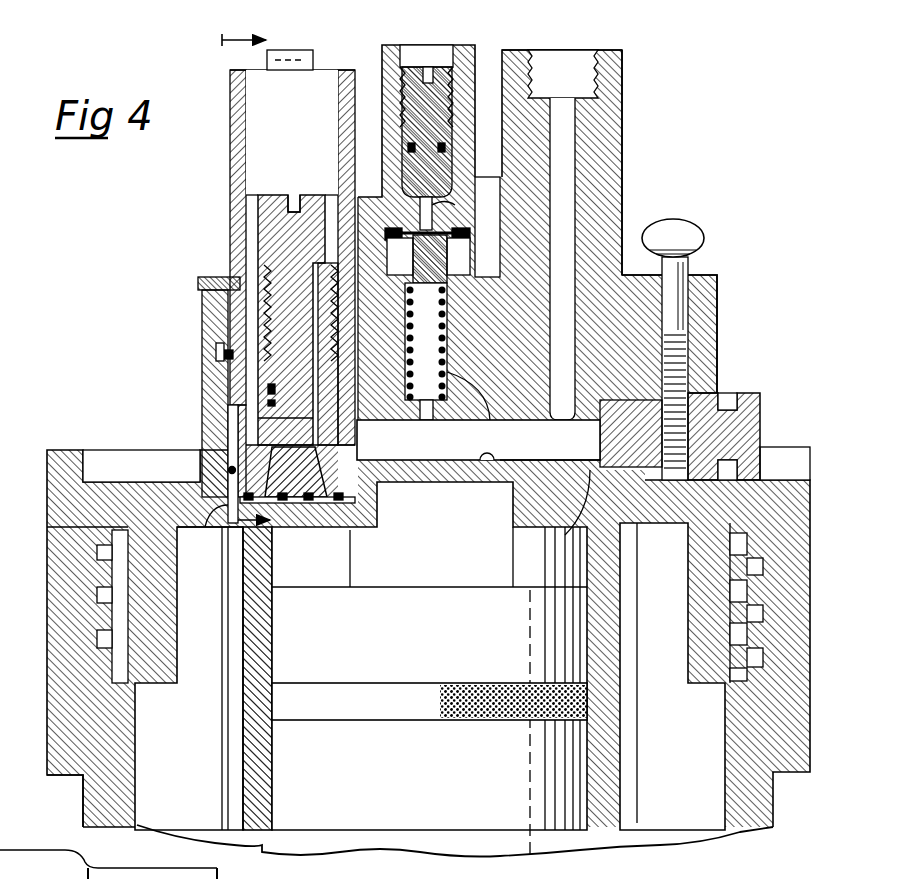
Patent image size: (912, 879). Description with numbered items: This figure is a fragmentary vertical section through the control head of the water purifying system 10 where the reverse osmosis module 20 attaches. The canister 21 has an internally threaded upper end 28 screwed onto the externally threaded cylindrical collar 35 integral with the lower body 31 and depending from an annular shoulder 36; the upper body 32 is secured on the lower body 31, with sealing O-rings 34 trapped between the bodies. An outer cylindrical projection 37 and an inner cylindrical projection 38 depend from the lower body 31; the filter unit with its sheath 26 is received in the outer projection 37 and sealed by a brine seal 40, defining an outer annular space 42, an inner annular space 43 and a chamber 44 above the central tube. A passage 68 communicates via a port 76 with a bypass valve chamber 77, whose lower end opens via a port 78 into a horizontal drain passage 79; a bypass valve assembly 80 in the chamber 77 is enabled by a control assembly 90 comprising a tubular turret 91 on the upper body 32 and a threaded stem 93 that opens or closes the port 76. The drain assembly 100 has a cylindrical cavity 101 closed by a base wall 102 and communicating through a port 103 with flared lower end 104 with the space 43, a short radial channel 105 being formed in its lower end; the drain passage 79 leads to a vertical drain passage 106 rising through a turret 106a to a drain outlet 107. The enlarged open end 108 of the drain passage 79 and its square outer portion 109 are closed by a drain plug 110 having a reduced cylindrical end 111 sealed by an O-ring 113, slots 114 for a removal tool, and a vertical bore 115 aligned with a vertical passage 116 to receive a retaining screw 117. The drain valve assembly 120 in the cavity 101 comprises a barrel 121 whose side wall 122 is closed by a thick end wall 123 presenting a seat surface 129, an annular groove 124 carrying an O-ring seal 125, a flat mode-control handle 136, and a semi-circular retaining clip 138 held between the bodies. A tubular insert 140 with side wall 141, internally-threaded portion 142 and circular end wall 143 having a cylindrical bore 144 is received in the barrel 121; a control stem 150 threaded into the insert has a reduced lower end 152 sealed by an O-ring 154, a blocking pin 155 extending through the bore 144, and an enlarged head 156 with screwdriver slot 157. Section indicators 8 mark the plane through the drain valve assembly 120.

The section line 8- 8 is at (237, 280).
The water purifying system 10 is at (680, 78).
The reverse osmosis module 20 is at (100, 274).
The canister 21 is at (83, 800).
The cylindrical coating or sheath 26 is at (530, 855).
The internally threaded upper end 28 is at (47, 688).
The lower body 31 is at (720, 322).
The upper body 32 is at (352, 166).
The sealing O-rings 34 is at (472, 233).
The externally threaded cylindrical collar 35 is at (125, 612).
The annular shoulder 36 is at (60, 535).
The outer cylindrical projection 37 is at (272, 790).
The inner cylindrical projection 38 is at (513, 572).
The brine seal 40 is at (502, 720).
The outer annular space 42 is at (182, 818).
The inner annular space 43 is at (292, 578).
The chamber 44 is at (212, 658).
The passage 68 is at (398, 186).
The port 76 is at (487, 182).
The bypass valve chamber 77 is at (488, 422).
The port 78 is at (433, 424).
The horizontal drain passage 79 is at (486, 464).
The bypass valve assembly 80 is at (449, 293).
The control assembly 90 is at (420, 45).
The tubular turret 91 is at (475, 62).
The stem 93 is at (437, 62).
The drain assembly 100 is at (137, 396).
The cylindrical cavity 101 is at (342, 192).
The base wall 102 is at (360, 535).
The port 103 is at (300, 505).
The outwardly-flared lower end 104 is at (318, 505).
The short radial channel 105 is at (218, 527).
The vertical drain passage 106 is at (614, 165).
The turret 106a is at (622, 136).
The drain outlet 107 is at (575, 62).
The enlarged open end 108 is at (563, 510).
The enlarged outer portion 109 is at (724, 395).
The drain plug 110 is at (760, 412).
The reduced cylindrical end 111 is at (590, 450).
The O-ring 113 is at (600, 430).
The slots 114 is at (738, 395).
The vertical bore 115 is at (675, 480).
The vertical passage 116 is at (706, 282).
The screw 117 is at (688, 258).
The drain valve assembly 120 is at (192, 185).
The barrel 121 is at (228, 148).
The side wall 122 is at (230, 103).
The end wall 123 is at (378, 498).
The annular groove 124 is at (224, 353).
The O-ring seal 125 is at (222, 360).
The seat surface 129 is at (230, 470).
The mode-control handle 136 is at (310, 52).
The retaining clip 138 is at (198, 283).
The tubular insert 140 is at (226, 262).
The side wall 141 is at (268, 388).
The internally-threaded portion 142 is at (330, 318).
The circular end wall 143 is at (348, 444).
The cylindrical bore 144 is at (360, 452).
The control stem 150 is at (262, 300).
The reduced lower end 152 is at (270, 402).
The O-ring 154 is at (285, 418).
The blocking pin 155 is at (232, 440).
The enlarged head 156 is at (262, 225).
The screwdriver slot 157 is at (292, 200).